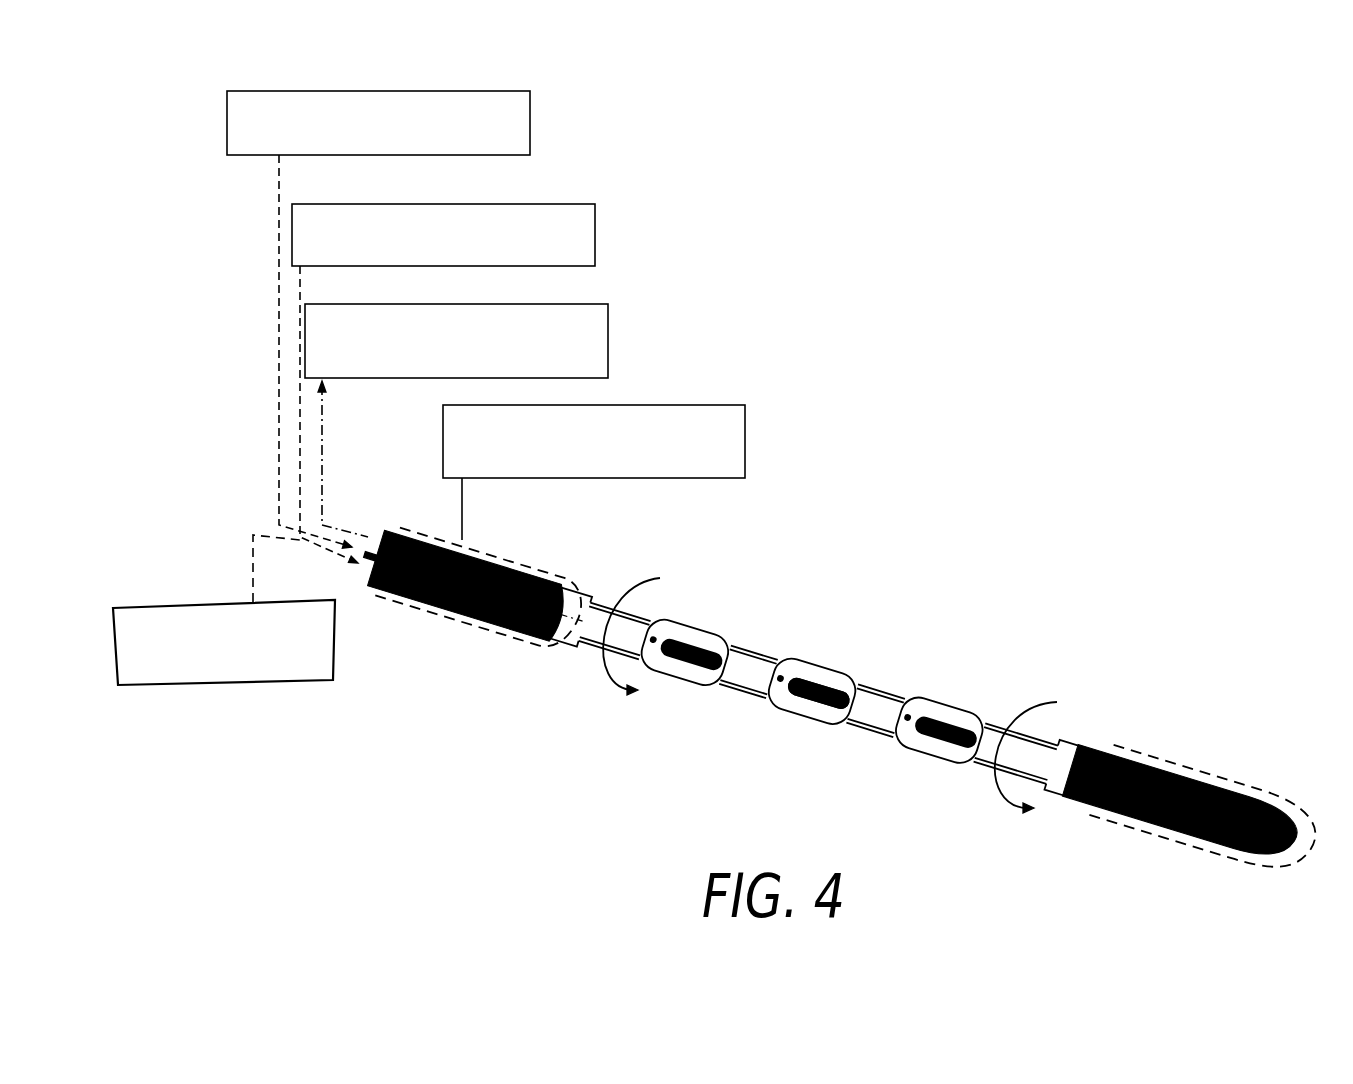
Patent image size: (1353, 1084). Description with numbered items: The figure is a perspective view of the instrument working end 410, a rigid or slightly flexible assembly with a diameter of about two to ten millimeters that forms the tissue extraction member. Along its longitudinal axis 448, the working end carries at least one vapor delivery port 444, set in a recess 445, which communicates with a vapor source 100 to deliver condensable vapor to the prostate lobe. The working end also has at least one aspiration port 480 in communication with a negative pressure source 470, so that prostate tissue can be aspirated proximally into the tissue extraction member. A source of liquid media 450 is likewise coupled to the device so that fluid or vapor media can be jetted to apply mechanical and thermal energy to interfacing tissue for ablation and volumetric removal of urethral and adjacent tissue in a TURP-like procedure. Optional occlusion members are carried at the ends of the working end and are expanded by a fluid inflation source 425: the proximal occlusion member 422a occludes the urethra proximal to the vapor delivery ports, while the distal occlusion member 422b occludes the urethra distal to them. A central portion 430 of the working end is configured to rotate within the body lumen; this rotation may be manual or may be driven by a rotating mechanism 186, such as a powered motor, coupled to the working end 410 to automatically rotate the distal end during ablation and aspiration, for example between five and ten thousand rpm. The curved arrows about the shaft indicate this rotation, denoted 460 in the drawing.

The vapor source 100 is at (378, 319).
The source of liquid media 450 is at (443, 383).
The negative pressure source 470 is at (456, 420).
The fluid inflation source 425 is at (594, 472).
The rotating mechanism 186 is at (224, 610).
The working end 410 is at (1003, 465).
The longitudinal axis 448 is at (440, 604).
The proximal occlusion member 422a is at (500, 553).
The distal occlusion member 422b is at (1143, 757).
The vapor delivery port 444 is at (668, 626).
The recess 445 is at (733, 640).
The central portion 430 is at (840, 667).
The aspiration port 480 is at (853, 682).
The rotation direction 460 is at (980, 720).